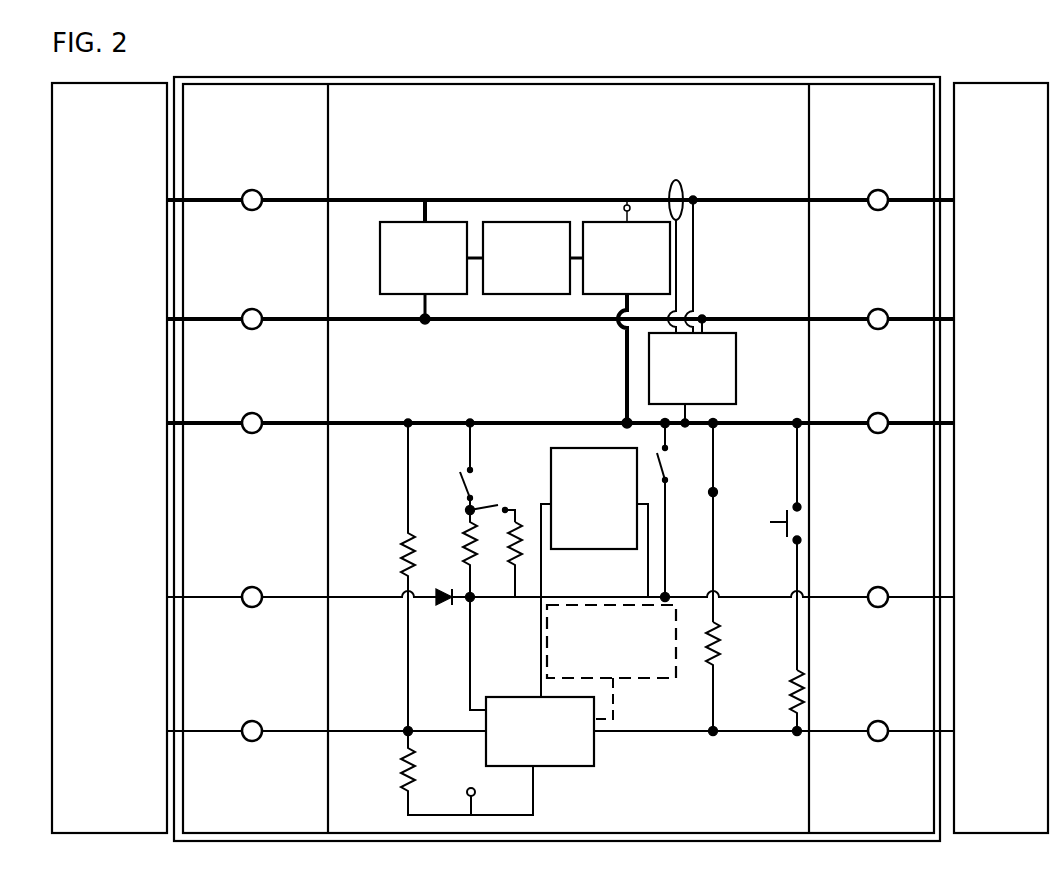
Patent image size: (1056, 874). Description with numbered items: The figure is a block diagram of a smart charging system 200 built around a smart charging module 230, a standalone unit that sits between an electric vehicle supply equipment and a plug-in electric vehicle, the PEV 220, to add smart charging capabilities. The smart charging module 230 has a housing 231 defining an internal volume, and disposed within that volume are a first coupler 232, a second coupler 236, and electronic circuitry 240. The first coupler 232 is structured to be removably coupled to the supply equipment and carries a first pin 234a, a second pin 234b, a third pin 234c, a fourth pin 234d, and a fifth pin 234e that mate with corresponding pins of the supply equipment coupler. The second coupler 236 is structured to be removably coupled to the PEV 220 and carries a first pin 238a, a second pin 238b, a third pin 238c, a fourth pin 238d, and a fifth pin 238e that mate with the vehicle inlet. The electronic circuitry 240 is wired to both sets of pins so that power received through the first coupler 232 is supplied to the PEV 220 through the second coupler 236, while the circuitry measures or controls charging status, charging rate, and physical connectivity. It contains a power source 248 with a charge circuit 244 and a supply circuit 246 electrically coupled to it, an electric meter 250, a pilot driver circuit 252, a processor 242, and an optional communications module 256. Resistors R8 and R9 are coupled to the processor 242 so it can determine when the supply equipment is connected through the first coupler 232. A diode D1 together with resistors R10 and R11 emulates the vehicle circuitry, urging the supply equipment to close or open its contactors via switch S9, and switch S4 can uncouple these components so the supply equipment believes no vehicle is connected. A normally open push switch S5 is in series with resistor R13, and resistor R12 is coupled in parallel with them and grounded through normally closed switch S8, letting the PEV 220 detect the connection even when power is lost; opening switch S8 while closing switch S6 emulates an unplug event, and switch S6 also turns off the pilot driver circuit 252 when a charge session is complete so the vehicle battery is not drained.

The charging system 200 is at (936, 44).
The PEV 220 is at (984, 135).
The smart charging module 230 is at (761, 74).
The housing 231 is at (300, 73).
The first coupler 232 is at (236, 131).
The first pin 234a is at (248, 190).
The second pin 234b is at (250, 300).
The third pin 234c is at (250, 404).
The fourth pin 234d is at (250, 577).
The fifth pin 234e is at (250, 711).
The second coupler 236 is at (855, 152).
The first pin 238a is at (908, 182).
The second pin 238b is at (874, 302).
The third pin 238c is at (874, 406).
The fourth pin 238d is at (874, 581).
The fifth pin 238e is at (874, 715).
The electronic circuitry 240 is at (532, 141).
The processor 242 is at (524, 752).
The charge circuit 244 is at (408, 288).
The supply circuit 246 is at (611, 288).
The power source 248 is at (511, 288).
The electric meter 250 is at (676, 400).
The pilot driver circuit 252 is at (578, 544).
The communications module 256 is at (595, 674).
The switch S4 is at (454, 467).
The normally open switch S5 is at (778, 545).
The switch S6 is at (673, 510).
The normally closed switch S8 is at (725, 521).
The switch S9 is at (492, 504).
The resistor R8 is at (450, 771).
The resistor R9 is at (393, 575).
The resistor R10 is at (464, 530).
The resistor R11 is at (519, 568).
The resistor R12 is at (730, 679).
The resistor R13 is at (777, 703).
The diode D1 is at (444, 606).